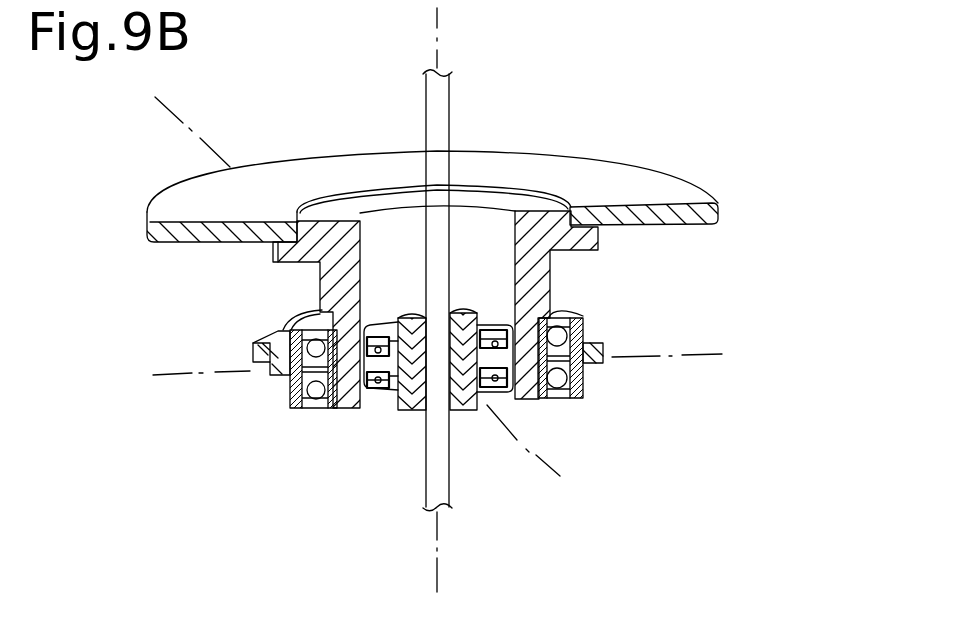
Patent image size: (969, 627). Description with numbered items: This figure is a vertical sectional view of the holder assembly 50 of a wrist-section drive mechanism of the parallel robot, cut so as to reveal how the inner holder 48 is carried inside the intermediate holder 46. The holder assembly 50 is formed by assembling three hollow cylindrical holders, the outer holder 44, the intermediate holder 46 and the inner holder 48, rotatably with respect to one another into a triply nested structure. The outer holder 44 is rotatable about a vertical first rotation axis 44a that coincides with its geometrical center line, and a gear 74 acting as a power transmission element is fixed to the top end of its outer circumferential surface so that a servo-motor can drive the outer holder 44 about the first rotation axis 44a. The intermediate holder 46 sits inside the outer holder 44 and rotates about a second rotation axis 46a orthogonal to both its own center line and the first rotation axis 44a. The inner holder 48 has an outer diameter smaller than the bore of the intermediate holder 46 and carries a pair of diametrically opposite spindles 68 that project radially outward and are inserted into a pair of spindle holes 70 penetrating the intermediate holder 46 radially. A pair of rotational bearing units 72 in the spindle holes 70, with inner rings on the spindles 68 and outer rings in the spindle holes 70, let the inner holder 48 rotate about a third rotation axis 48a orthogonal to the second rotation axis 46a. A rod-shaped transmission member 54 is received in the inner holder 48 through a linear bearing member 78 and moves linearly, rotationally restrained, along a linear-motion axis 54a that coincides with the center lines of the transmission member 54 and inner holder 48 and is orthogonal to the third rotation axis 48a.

The outer holder 44 is at (320, 287).
The first rotation axis 44a is at (437, 20).
The intermediate holder 46 is at (487, 322).
The second rotation axis 46a is at (177, 112).
The inner holder 48 is at (468, 312).
The third rotation axis 48a is at (170, 377).
The holder assembly 50 is at (635, 276).
The transmission member 54 is at (445, 473).
The linear-motion axis 54a is at (440, 582).
The spindles 68 is at (372, 392).
The spindle holes 70 is at (356, 298).
The rotational bearing units 72 is at (483, 397).
The gear 74 is at (635, 175).
The linear bearing member 78 is at (398, 316).